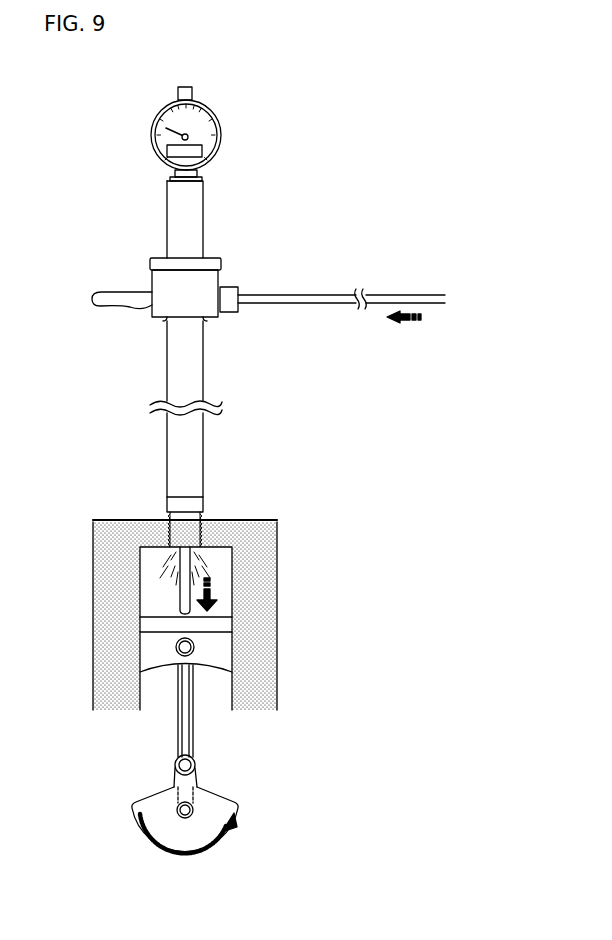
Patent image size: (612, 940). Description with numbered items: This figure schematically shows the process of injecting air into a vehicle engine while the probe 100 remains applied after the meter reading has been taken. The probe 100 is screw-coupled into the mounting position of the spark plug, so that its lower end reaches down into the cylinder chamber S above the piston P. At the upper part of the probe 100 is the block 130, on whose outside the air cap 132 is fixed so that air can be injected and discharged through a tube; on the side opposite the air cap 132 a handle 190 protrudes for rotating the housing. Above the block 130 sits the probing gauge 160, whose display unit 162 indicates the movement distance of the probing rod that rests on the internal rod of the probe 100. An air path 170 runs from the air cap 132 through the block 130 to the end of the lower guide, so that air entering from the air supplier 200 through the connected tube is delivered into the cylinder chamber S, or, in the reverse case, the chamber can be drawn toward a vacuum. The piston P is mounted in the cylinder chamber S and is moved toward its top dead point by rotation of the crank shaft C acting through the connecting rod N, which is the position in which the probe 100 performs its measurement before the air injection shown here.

The probe 100 is at (209, 377).
The block 130 is at (224, 263).
The air cap 132 is at (242, 308).
The probing gauge 160 is at (156, 110).
The display unit 162 is at (163, 154).
The air path 170 is at (198, 548).
The handle 190 is at (114, 311).
The air supplier 200 is at (402, 293).
The cylinder chamber S is at (145, 605).
The piston P is at (148, 645).
The connecting rod N is at (178, 736).
The crank shaft C is at (191, 817).